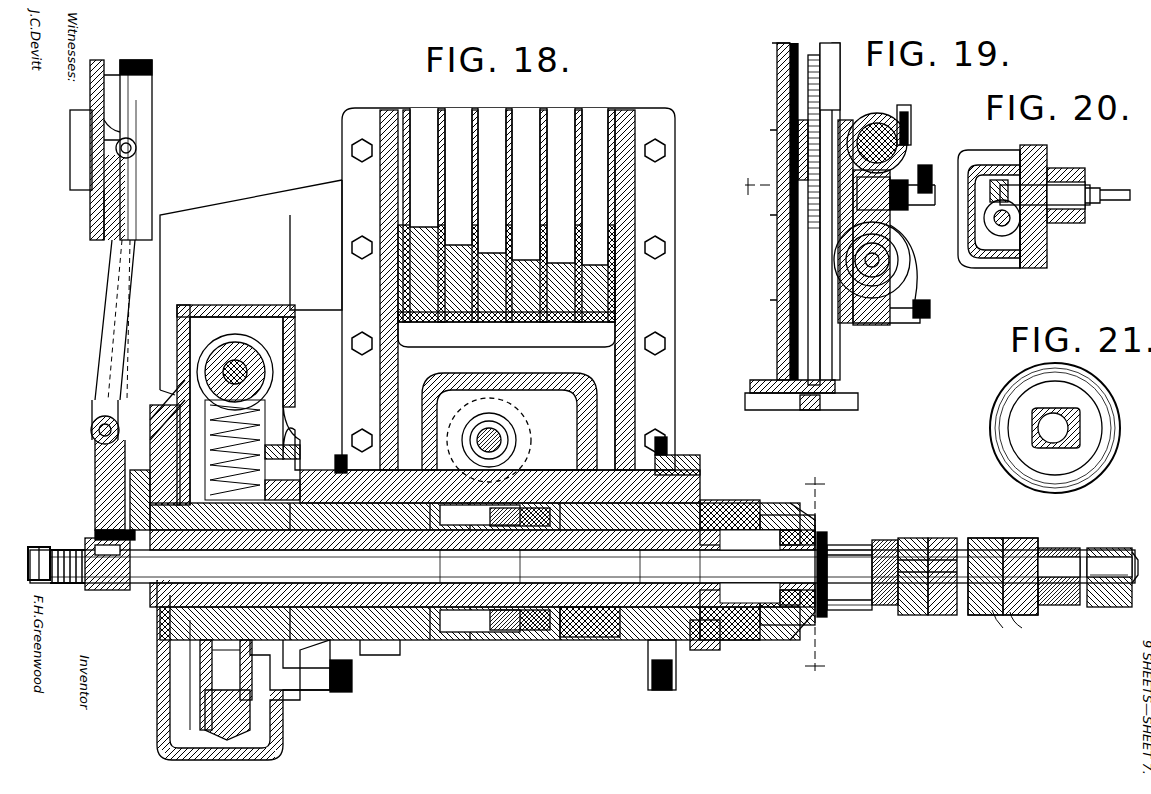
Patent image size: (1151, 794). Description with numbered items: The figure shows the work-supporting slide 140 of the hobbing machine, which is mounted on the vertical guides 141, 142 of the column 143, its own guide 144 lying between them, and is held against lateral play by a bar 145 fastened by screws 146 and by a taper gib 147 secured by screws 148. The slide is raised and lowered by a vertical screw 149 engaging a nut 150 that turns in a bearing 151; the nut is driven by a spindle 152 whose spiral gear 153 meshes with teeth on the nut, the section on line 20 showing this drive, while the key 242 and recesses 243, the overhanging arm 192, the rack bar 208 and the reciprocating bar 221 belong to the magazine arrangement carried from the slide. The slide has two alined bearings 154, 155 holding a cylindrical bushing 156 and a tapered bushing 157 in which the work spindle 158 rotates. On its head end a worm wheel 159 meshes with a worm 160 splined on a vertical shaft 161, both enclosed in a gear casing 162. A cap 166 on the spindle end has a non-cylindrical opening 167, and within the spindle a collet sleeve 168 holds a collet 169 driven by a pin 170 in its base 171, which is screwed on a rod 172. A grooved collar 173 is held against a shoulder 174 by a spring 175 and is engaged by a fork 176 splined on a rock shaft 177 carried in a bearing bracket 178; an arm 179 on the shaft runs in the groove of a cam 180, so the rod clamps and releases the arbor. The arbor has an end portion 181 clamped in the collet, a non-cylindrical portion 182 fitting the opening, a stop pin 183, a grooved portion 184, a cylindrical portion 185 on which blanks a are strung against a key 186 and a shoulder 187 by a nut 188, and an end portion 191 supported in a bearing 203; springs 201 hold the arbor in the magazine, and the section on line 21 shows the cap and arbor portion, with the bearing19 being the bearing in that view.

In FIG. 18, the column 143 is at (500, 110).
In FIG. 18, the slide 140 is at (420, 425).
In FIG. 19, the slide 140 is at (860, 115).
In FIG. 20, the slide 140 is at (1047, 255).
In FIG. 18, the vertical screw 149 is at (490, 428).
In FIG. 19, the vertical screw 149 is at (808, 80).
In FIG. 20, the vertical screw 149 is at (998, 235).
In FIG. 18, the guide 142 is at (604, 425).
In FIG. 19, the guide 142 is at (840, 80).
In FIG. 20, the guide 142 is at (1022, 148).
In FIG. 18, the guide 144 is at (532, 470).
In FIG. 19, the guide 144 is at (838, 233).
In FIG. 18, the guide 141 is at (357, 460).
In FIG. 20, the guide 141 is at (1022, 268).
In FIG. 18, the bar 145 is at (695, 475).
In FIG. 18, the vertical shaft 161 is at (255, 365).
In FIG. 18, the worm 160 is at (265, 372).
In FIG. 18, the taper gib 147 is at (330, 455).
In FIG. 18, the bearing bracket 178 is at (150, 400).
In FIG. 18, the shoulder 174 is at (148, 585).
In FIG. 18, the spring 175 is at (62, 583).
In FIG. 18, the collar 173 is at (125, 590).
In FIG. 18, the work spindle 158 is at (473, 610).
In FIG. 18, the bushing 156 is at (443, 640).
In FIG. 18, the bearing 154 is at (410, 645).
In FIG. 18, the bushing 157 is at (555, 640).
In FIG. 18, the bearing 155 is at (595, 645).
In FIG. 18, the rod 172 is at (632, 645).
In FIG. 18, the screws 146 is at (668, 690).
In FIG. 19, the screws 146 is at (926, 165).
In FIG. 18, the base 171 is at (706, 652).
In FIG. 18, the collet sleeve 168 is at (770, 640).
In FIG. 18, the pin 170 is at (770, 508).
In FIG. 18, the cap 166 is at (812, 525).
In FIG. 21, the cap 166 is at (1005, 428).
In FIG. 18, the opening 167 is at (820, 536).
In FIG. 21, the opening 167 is at (1062, 440).
In FIG. 18, the collet 169 is at (826, 600).
In FIG. 18, the stop pin 183 is at (850, 610).
In FIG. 18, the end portion 181 is at (892, 536).
In FIG. 18, the non-cylindrical portion 182 is at (885, 605).
In FIG. 21, the non-cylindrical portion 182 is at (1080, 418).
In FIG. 18, the grooved portion 184 is at (912, 615).
In FIG. 18, the cylindrical portion 185 is at (950, 615).
In FIG. 18, the key 186 is at (945, 535).
In FIG. 18, the shoulder 187 is at (932, 560).
In FIG. 18, the gear blanks a is at (1007, 624).
In FIG. 18, the springs 201 is at (1058, 545).
In FIG. 18, the nut 188 is at (1085, 607).
In FIG. 18, the end portion 191 is at (1115, 607).
In FIG. 18, the bearing 203 is at (1110, 550).
In FIG. 18, the section line 21 is at (815, 575).
In FIG. 18, the gear casing 162 is at (283, 722).
In FIG. 18, the worm wheel 159 is at (232, 728).
In FIG. 18, the screws 148 is at (350, 688).
In FIG. 18, the cam 180 is at (130, 60).
In FIG. 18, the arm 179 is at (100, 325).
In FIG. 18, the rock shaft 177 is at (92, 432).
In FIG. 18, the fork 176 is at (95, 500).
In FIG. 19, the bearing 151 is at (777, 163).
In FIG. 19, the recesses 243 is at (798, 101).
In FIG. 19, the key 242 is at (820, 119).
In FIG. 19, the nut 150 is at (798, 150).
In FIG. 20, the nut 150 is at (975, 250).
In FIG. 19, the section line 20 is at (749, 186).
In FIG. 19, the bar 208 is at (877, 123).
In FIG. 19, the overhanging arm 192 is at (896, 146).
In FIG. 19, the bar 221 is at (911, 125).
In FIG. 20, the spiral gear 153 is at (996, 182).
In FIG. 20, the spindle 152 is at (1065, 185).
In FIG. 19, the bearing bearing19 is at (875, 261).